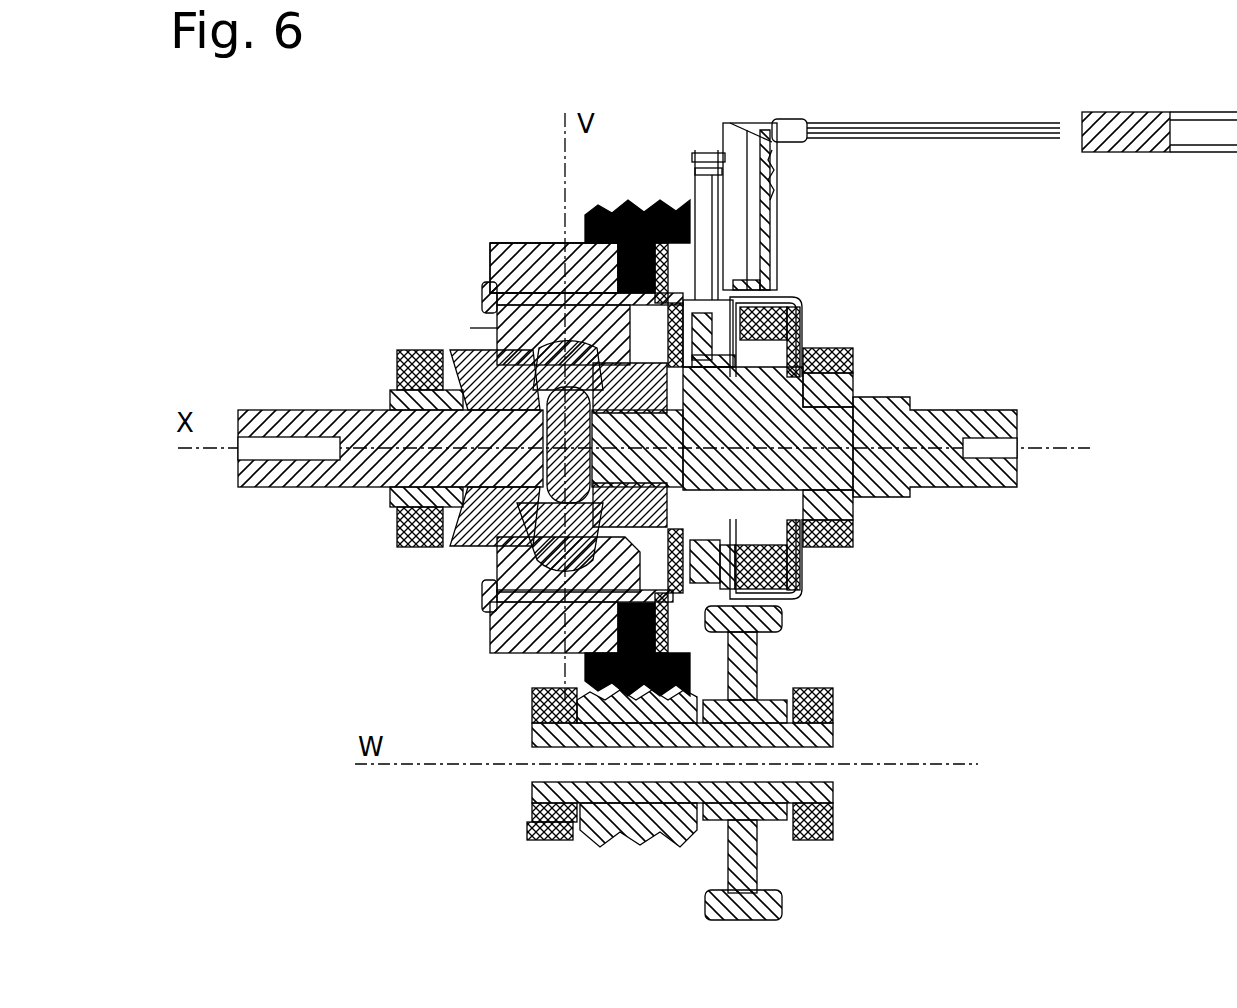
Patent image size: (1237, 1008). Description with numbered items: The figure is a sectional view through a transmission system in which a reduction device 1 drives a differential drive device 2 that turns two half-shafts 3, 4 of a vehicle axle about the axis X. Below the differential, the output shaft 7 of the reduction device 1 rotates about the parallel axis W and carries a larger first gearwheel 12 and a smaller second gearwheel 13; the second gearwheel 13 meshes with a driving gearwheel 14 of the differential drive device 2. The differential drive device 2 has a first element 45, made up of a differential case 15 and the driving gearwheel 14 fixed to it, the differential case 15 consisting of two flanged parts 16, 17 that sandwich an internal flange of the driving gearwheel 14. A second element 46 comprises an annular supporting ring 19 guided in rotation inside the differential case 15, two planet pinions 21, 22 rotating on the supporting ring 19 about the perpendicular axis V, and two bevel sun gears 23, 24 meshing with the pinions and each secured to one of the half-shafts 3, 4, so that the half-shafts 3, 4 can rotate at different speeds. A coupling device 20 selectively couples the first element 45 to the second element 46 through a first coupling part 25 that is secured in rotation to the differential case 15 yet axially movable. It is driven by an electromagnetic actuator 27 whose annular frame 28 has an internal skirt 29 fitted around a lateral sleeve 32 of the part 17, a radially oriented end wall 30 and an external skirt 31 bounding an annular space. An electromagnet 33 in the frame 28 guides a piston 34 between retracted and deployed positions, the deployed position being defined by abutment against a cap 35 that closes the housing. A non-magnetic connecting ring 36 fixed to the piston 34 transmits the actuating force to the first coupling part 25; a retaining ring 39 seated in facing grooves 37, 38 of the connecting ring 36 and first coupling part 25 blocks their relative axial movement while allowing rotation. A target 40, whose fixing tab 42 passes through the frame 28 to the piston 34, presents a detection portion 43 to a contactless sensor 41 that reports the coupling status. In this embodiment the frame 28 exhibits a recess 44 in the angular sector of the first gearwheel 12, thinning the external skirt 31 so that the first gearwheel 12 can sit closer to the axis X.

The reduction device 1 is at (860, 748).
The differential drive device 2 is at (448, 325).
The half-shaft 3 is at (330, 408).
The half-shaft 4 is at (927, 407).
The output shaft 7 is at (535, 790).
The first gearwheel 12 is at (757, 875).
The second gearwheel 13 is at (603, 843).
The driving gearwheel 14 is at (587, 215).
The differential case 15 is at (542, 262).
The part of the differential case 16 is at (490, 251).
The part of the differential case 17 is at (664, 212).
The supporting ring 19 is at (488, 615).
The coupling device 20 is at (875, 320).
The planet pinion 21 is at (483, 302).
The planet pinion 22 is at (485, 580).
The sun gear 23 is at (470, 403).
The sun gear 24 is at (468, 548).
The first coupling part 25 is at (703, 590).
The actuator 27 is at (735, 303).
The frame 28 is at (800, 568).
The internal skirt 29 is at (853, 384).
The end wall 30 is at (853, 357).
The external skirt 31 is at (760, 253).
The lateral sleeve 32 is at (850, 528).
The electromagnet 33 is at (800, 580).
The piston 34 is at (855, 550).
The cap 35 is at (745, 593).
The connecting ring 36 is at (800, 597).
The groove 37 is at (732, 290).
The groove 38 is at (686, 300).
The retaining ring 39 is at (702, 360).
The target 40 is at (790, 267).
The sensor 41 is at (770, 250).
The fixing tab 42 is at (787, 318).
The detection portion 43 is at (755, 150).
The recess 44 is at (790, 600).
The first element 45 is at (530, 273).
The second element 46 is at (395, 512).